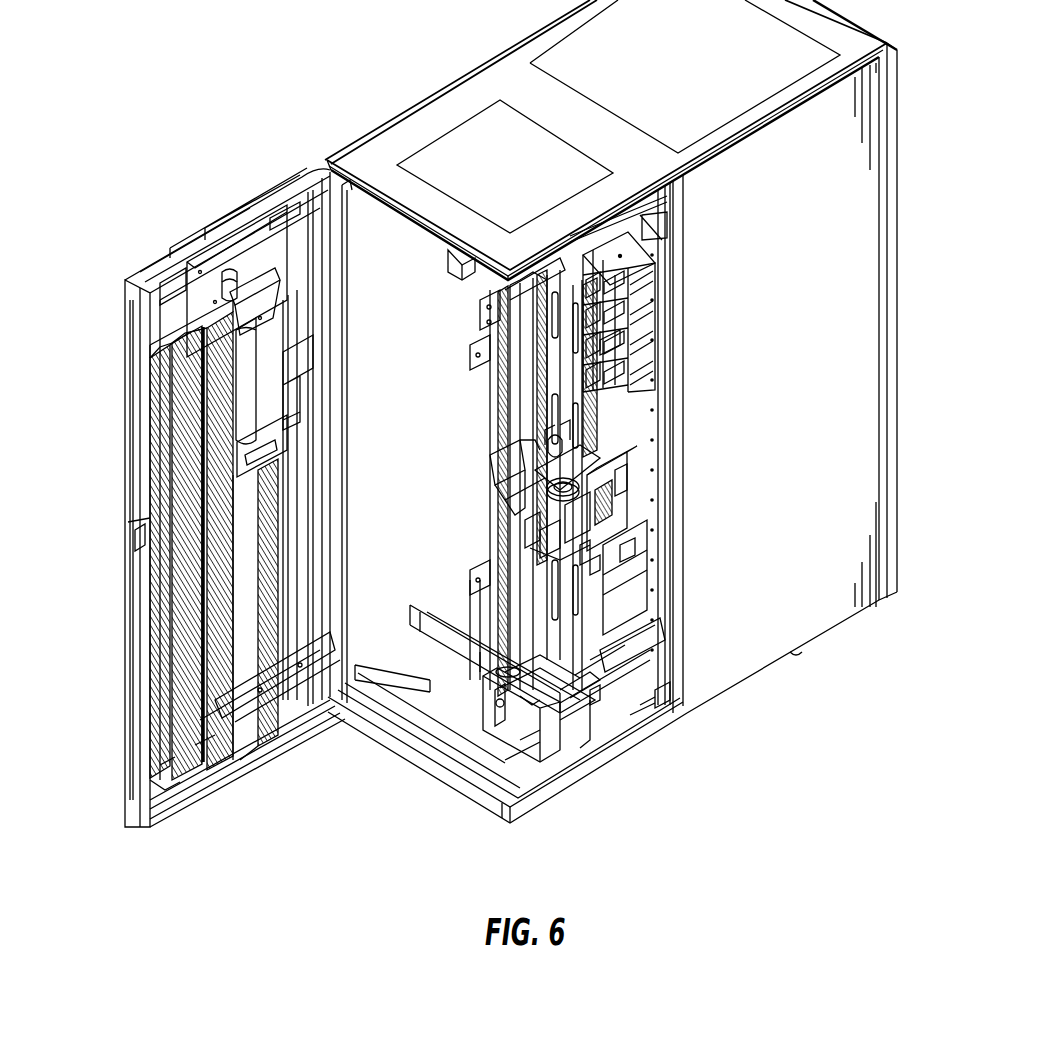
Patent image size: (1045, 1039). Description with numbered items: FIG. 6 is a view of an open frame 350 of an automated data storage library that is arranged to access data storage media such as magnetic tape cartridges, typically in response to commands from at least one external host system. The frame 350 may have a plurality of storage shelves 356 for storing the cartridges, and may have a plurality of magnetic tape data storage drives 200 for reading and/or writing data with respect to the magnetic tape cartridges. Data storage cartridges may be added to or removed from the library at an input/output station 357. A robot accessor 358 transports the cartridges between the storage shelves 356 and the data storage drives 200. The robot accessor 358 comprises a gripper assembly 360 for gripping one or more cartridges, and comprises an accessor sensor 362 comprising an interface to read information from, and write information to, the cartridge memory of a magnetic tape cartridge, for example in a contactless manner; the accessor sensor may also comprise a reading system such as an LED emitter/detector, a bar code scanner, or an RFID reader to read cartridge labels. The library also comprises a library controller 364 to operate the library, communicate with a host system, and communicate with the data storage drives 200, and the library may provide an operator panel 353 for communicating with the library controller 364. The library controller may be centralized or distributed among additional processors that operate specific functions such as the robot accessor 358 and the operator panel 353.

The magnetic tape data storage drive 200 is at (636, 276).
The frame 350 is at (475, 438).
The operator panel 353 is at (298, 288).
The storage shelves 356 is at (497, 410).
The input/output station 357 is at (152, 370).
The robot accessor 358 is at (540, 706).
The gripper assembly 360 is at (645, 500).
The accessor sensor 362 is at (520, 530).
The library controller 364 is at (462, 276).